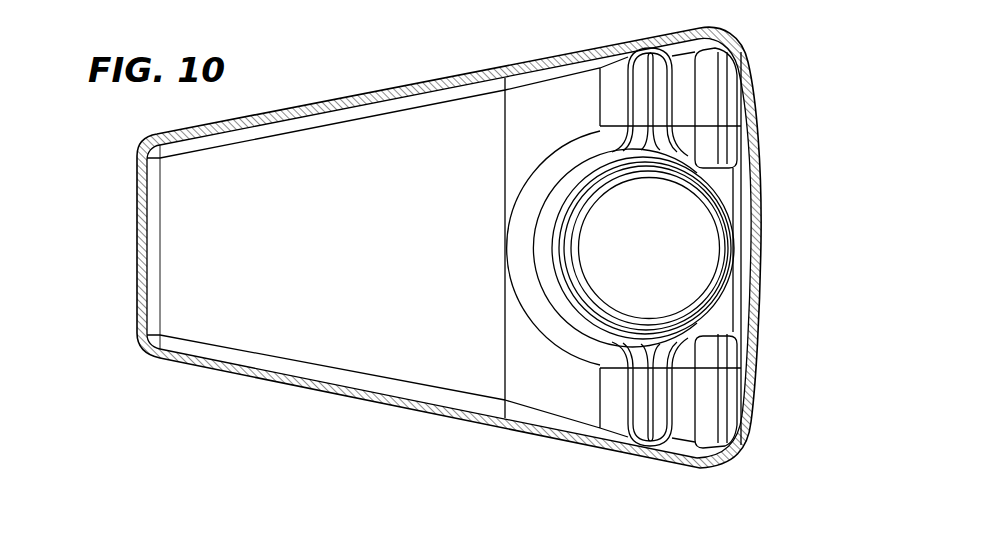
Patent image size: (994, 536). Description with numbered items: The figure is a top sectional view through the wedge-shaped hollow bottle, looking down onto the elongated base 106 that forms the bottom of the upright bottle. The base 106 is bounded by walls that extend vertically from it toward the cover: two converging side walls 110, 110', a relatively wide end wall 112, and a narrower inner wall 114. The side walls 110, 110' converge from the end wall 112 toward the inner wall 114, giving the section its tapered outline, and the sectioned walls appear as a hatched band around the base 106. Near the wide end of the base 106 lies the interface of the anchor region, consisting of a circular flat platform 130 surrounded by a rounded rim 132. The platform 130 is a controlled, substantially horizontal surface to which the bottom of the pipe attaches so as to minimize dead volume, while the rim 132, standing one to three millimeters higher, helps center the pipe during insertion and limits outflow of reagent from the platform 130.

The base 106 is at (337, 330).
The side wall 110 is at (429, 79).
The side wall 110' is at (428, 428).
The end wall 112 is at (760, 125).
The inner wall 114 is at (137, 239).
The flat platform 130 is at (672, 257).
The rim 132 is at (688, 310).